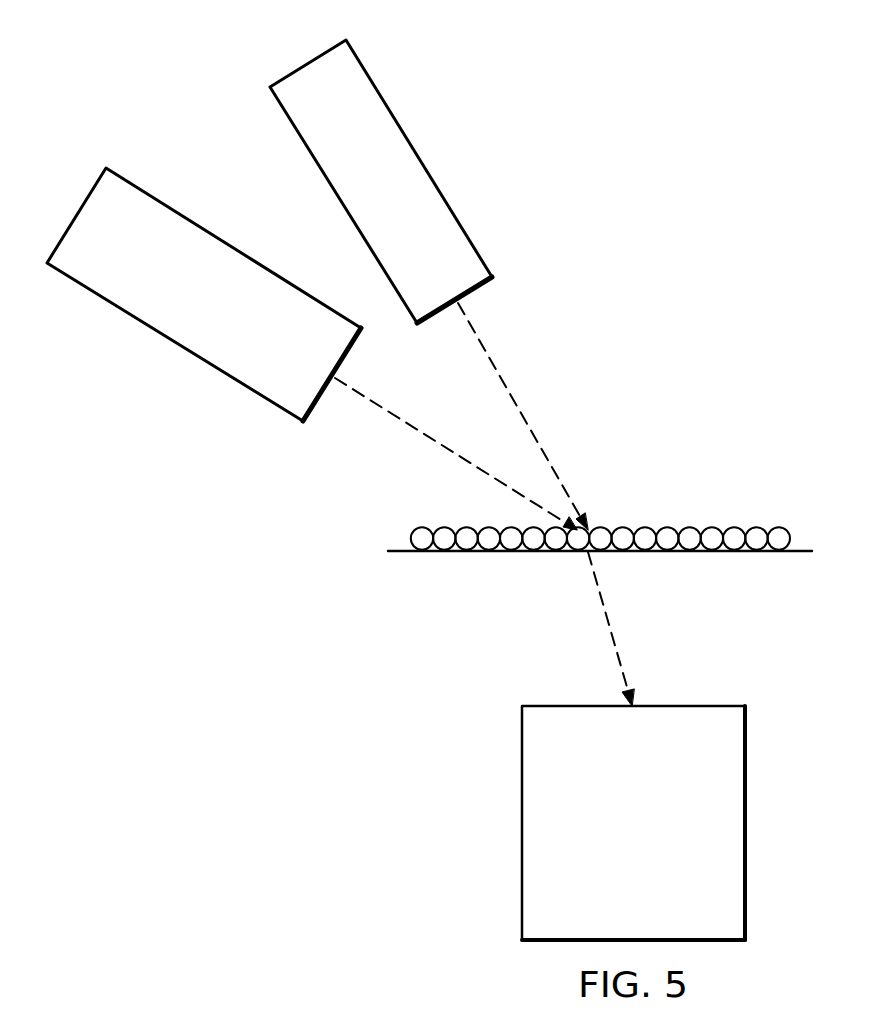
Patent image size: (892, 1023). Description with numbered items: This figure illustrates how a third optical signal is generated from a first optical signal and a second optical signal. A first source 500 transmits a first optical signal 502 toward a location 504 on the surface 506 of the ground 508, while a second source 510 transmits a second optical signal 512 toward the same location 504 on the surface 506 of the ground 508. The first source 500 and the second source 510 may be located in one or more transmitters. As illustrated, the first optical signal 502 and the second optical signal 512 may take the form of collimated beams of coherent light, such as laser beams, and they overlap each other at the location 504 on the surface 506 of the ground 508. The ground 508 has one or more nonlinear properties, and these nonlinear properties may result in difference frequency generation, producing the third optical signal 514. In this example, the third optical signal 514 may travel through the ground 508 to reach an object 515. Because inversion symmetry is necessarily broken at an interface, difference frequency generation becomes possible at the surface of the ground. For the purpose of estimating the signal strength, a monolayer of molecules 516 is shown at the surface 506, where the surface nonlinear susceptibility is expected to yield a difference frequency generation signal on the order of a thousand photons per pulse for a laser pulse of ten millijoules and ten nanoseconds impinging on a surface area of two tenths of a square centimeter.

The first source 500 is at (438, 131).
The first optical signal 502 is at (522, 415).
The location 504 is at (593, 523).
The surface 506 is at (753, 528).
The ground 508 is at (793, 553).
The second source 510 is at (155, 332).
The second optical signal 512 is at (450, 448).
The third optical signal 514 is at (607, 610).
The object 515 is at (656, 837).
The monolayer of molecules 516 is at (410, 540).